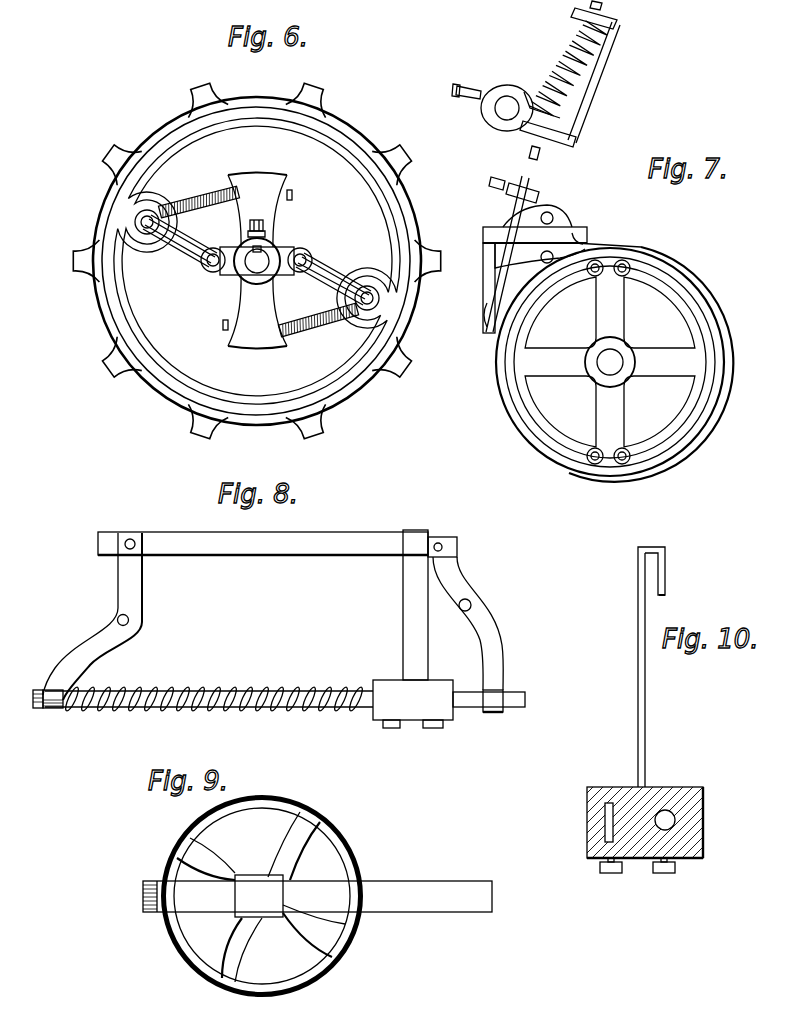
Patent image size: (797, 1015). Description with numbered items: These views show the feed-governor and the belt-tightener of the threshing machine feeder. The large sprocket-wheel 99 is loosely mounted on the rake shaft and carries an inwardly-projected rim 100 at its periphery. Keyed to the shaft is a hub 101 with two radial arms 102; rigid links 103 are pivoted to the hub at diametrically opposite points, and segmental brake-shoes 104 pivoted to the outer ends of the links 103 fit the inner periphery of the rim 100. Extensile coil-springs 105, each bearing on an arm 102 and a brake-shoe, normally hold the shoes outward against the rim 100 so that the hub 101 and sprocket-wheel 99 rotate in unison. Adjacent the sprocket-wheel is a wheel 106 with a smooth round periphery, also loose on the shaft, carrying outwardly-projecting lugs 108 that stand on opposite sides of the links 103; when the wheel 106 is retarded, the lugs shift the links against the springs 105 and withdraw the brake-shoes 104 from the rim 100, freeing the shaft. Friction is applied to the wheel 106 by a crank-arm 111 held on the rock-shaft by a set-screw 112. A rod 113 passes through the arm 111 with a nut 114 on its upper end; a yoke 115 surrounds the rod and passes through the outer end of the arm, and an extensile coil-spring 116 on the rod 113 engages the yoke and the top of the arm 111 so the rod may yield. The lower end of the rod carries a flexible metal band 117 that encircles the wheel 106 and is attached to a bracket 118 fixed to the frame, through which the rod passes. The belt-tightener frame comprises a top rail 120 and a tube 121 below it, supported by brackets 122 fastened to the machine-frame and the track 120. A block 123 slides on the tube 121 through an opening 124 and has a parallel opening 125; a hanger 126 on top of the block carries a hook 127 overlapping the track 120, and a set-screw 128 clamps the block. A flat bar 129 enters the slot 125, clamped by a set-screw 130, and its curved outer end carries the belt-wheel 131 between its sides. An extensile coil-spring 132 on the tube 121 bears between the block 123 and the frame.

In FIG. 6, the sprocket-wheel 99 is at (332, 166).
In FIG. 6, the rim 100 is at (258, 99).
In FIG. 6, the hub 101 is at (272, 257).
In FIG. 6, the radial arms 102 is at (265, 183).
In FIG. 6, the rigid links 103 is at (322, 273).
In FIG. 6, the segmental brake-shoes 104 is at (397, 228).
In FIG. 6, the extensile coil-springs 105 is at (326, 318).
In FIG. 7, the wheel 106 is at (683, 310).
In FIG. 7, the lugs 108 is at (620, 258).
In FIG. 7, the crank-arm 111 is at (577, 141).
In FIG. 7, the set-screw 112 is at (460, 83).
In FIG. 7, the rod 113 is at (575, 13).
In FIG. 7, the nut 114 is at (616, 18).
In FIG. 7, the yoke 115 is at (602, 73).
In FIG. 7, the extensile coil-spring 116 is at (565, 58).
In FIG. 7, the flexible metal band 117 is at (487, 335).
In FIG. 7, the bracket 118 is at (563, 223).
In FIG. 8, the top rail 120 is at (342, 533).
In FIG. 8, the tube 121 is at (40, 708).
In FIG. 8, the brackets 122 is at (143, 611).
In FIG. 8, the block 123 is at (413, 704).
In FIG. 10, the block 123 is at (670, 787).
In FIG. 10, the opening 124 is at (676, 819).
In FIG. 10, the opening 125 is at (604, 820).
In FIG. 10, the hanger 126 is at (637, 690).
In FIG. 10, the hook 127 is at (666, 573).
In FIG. 10, the set-screw 128 is at (667, 874).
In FIG. 9, the flat bar 129 is at (458, 906).
In FIG. 10, the set-screw 130 is at (612, 874).
In FIG. 9, the belt-wheel 131 is at (310, 828).
In FIG. 8, the extensile coil-spring 132 is at (212, 690).